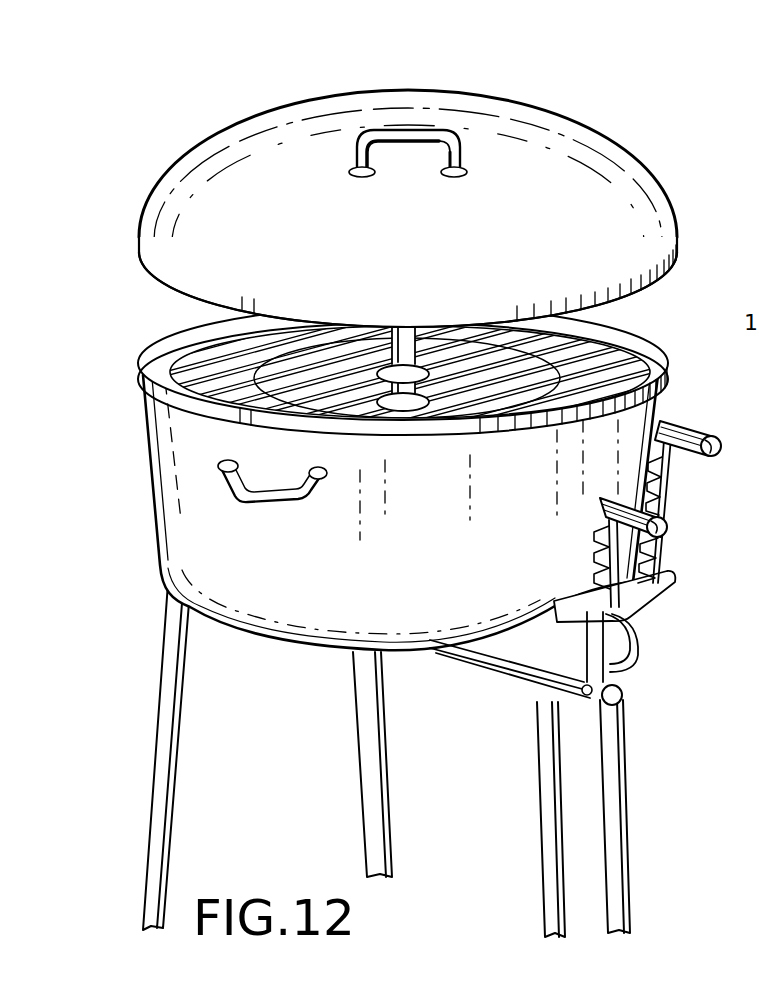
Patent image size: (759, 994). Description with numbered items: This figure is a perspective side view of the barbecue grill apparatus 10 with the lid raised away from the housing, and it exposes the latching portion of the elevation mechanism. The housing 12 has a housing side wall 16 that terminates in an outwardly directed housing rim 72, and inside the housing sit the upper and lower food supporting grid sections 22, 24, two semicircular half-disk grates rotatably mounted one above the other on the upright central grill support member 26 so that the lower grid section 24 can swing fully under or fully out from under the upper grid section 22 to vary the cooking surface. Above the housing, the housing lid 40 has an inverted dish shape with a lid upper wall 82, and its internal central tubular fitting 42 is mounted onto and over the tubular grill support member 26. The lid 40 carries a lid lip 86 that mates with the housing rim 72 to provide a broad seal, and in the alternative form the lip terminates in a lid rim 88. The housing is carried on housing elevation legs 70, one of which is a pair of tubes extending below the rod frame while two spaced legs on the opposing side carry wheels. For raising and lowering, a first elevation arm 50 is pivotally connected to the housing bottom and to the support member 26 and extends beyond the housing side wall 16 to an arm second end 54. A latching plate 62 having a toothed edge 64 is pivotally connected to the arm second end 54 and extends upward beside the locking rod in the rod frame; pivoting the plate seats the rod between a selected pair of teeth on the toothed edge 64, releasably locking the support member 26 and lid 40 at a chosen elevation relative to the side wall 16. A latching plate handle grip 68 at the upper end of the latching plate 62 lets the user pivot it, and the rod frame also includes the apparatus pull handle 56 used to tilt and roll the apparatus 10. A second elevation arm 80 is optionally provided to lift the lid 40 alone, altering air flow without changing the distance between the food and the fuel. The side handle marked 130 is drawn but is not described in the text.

The barbecue grill apparatus 10 is at (702, 226).
The housing 12 is at (377, 512).
The housing side wall 16 is at (158, 523).
The upper food supporting grid section 22 is at (410, 372).
The lower food supporting grid section 24 is at (198, 349).
The grill support member 26 is at (397, 415).
The housing lid 40 is at (385, 208).
The central tubular fitting 42 is at (400, 342).
The first elevation arm 50 is at (505, 671).
The arm second end 54 is at (622, 702).
The apparatus pull handle 56 is at (645, 593).
The latching plate 62 is at (622, 517).
The toothed edge 64 is at (648, 487).
The latching plate handle grip 68 is at (698, 430).
The housing elevation legs 70 is at (154, 749).
The housing rim 72 is at (138, 319).
The second elevation arm 80 is at (637, 657).
The lid upper wall 82 is at (206, 136).
The lid lip 86 is at (242, 303).
The lid rim 88 is at (148, 277).
The side handle 130 is at (257, 500).